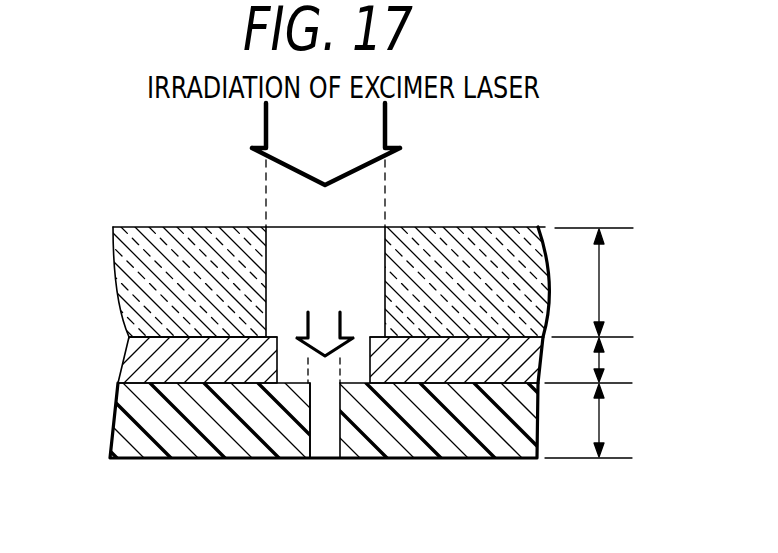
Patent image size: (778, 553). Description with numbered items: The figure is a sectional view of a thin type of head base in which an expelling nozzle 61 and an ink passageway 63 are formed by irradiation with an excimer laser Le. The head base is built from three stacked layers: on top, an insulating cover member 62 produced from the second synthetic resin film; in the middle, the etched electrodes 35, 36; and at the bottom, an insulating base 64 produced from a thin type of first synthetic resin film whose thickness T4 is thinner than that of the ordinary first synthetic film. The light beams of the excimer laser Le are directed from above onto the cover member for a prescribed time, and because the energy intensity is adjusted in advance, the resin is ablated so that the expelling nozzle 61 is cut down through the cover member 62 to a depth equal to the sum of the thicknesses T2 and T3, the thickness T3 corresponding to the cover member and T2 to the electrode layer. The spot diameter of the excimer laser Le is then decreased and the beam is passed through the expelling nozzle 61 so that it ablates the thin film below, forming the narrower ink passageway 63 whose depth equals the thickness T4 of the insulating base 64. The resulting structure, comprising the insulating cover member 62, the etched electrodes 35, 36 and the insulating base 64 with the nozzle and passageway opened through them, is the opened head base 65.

The expelling nozzle 61 is at (363, 238).
The insulating cover member 62 is at (120, 232).
The ink passageway 63 is at (323, 450).
The insulating base 64 is at (114, 430).
The etched electrode 35 is at (122, 353).
The etched electrode 36 is at (552, 337).
The opened head base 65 is at (625, 207).
The excimer laser Le is at (378, 133).
The thickness T3 is at (593, 282).
The thickness T2 is at (590, 363).
The thickness T4 is at (590, 421).